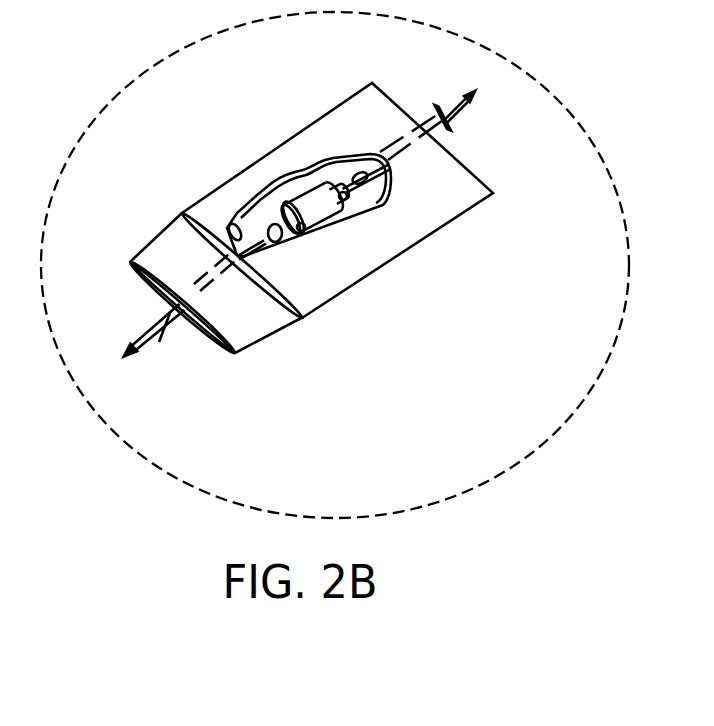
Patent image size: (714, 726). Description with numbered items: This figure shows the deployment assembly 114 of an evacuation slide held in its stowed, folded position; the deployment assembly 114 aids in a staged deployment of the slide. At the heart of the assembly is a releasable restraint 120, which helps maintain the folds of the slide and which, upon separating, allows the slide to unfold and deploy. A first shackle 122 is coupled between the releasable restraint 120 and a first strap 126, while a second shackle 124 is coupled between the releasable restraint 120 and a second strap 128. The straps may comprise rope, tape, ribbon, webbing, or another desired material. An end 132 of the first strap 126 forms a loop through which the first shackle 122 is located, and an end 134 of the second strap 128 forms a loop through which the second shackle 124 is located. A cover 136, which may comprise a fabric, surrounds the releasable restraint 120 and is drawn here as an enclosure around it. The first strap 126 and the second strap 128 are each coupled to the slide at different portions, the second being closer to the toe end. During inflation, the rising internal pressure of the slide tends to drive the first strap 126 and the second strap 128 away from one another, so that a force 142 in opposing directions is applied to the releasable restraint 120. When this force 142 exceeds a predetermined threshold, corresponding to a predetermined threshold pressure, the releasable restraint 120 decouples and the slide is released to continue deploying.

The deployment assembly 114 is at (167, 112).
The releasable restraint 120 is at (333, 226).
The first shackle 122 is at (350, 188).
The second shackle 124 is at (281, 238).
The first strap 126 is at (450, 128).
The second strap 128 is at (167, 322).
The end of first strap 132 is at (368, 172).
The end of second strap 134 is at (242, 240).
The cover 136 is at (467, 196).
The force 142 is at (458, 104).